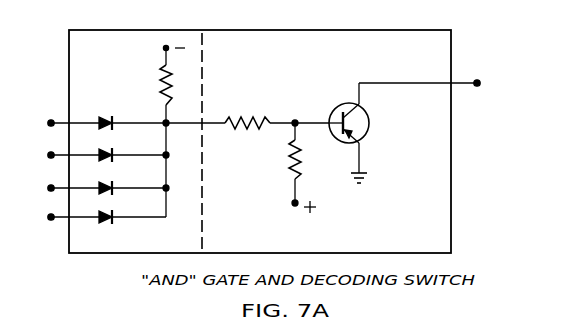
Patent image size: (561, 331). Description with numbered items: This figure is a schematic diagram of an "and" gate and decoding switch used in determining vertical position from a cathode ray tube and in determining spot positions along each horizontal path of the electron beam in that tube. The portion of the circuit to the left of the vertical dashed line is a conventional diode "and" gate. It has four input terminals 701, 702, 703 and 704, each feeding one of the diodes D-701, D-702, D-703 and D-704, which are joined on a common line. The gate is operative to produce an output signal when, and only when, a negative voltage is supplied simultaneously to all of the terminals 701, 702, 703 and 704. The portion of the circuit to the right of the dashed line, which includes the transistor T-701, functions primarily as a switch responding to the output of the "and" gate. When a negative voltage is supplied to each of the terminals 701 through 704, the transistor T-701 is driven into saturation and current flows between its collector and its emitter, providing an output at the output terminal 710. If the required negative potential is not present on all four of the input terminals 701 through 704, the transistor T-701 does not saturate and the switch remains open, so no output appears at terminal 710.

The terminal 701 is at (50, 123).
The terminal 702 is at (50, 155).
The terminal 703 is at (50, 188).
The terminal 704 is at (50, 217).
The output terminal 710 is at (480, 83).
The diode D-701 is at (100, 117).
The diode D-702 is at (103, 150).
The diode D-703 is at (103, 183).
The diode D-704 is at (103, 212).
The transistor T-701 is at (366, 117).